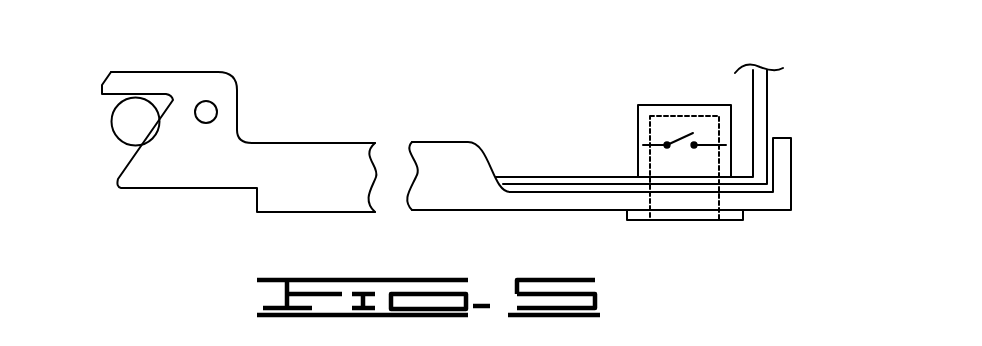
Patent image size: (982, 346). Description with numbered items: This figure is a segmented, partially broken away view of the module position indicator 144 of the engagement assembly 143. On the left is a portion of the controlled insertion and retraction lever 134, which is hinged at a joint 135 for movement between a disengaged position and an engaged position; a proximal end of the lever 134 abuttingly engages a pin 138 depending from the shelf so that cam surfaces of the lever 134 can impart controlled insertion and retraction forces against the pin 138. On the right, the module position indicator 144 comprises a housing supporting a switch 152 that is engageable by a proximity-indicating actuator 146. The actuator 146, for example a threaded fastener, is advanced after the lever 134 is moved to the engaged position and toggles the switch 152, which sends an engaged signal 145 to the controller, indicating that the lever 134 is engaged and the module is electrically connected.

The lever 134 is at (492, 211).
The joint 135 is at (214, 104).
The pin 138 is at (112, 123).
The engagement assembly 143 is at (679, 131).
The module position indicator 144 is at (638, 113).
The engaged signal 145 is at (706, 140).
The actuator 146 is at (733, 221).
The switch 152 is at (680, 138).